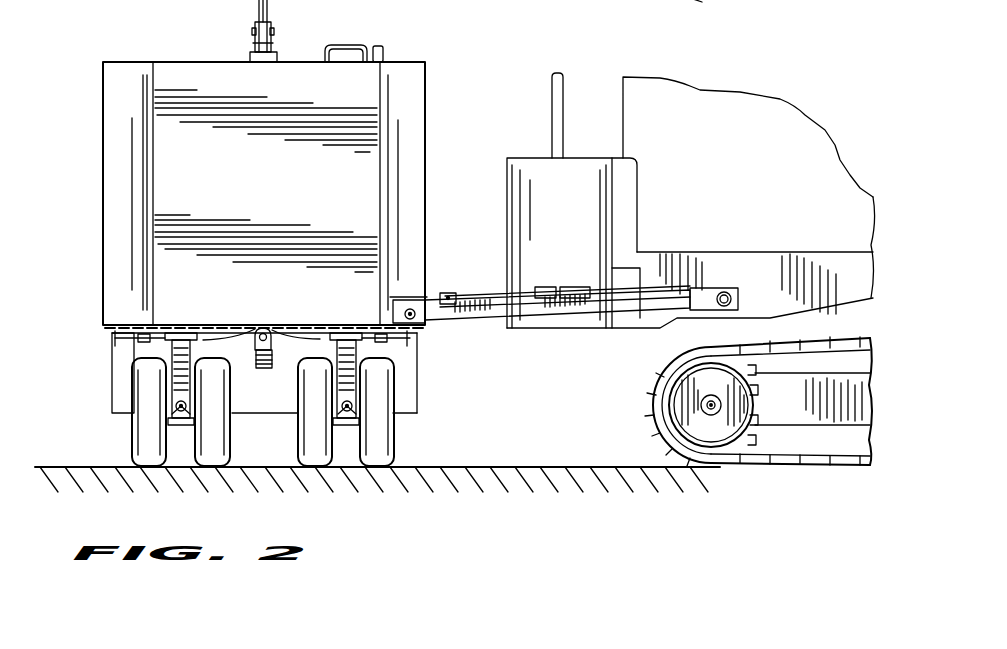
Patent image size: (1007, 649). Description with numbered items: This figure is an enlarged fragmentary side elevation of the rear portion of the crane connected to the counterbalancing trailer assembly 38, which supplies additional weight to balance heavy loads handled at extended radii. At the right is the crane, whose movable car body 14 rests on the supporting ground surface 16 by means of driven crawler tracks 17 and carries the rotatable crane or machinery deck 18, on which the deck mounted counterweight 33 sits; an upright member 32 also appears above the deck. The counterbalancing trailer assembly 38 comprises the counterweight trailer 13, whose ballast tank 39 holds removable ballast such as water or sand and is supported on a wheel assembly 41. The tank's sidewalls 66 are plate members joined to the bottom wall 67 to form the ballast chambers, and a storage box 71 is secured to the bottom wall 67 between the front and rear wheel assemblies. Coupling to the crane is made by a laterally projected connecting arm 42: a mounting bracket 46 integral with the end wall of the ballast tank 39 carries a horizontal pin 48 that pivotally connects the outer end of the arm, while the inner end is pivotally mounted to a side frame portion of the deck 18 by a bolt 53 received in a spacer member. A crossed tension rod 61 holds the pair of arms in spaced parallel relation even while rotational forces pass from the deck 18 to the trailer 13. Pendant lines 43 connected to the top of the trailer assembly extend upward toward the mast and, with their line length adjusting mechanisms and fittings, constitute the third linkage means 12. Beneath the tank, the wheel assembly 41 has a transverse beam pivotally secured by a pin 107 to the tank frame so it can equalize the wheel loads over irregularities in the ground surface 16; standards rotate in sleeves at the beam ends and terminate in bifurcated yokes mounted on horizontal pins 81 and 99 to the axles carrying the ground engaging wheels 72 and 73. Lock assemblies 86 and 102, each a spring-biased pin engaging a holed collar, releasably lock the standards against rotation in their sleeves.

The third linkage means 12 is at (282, 21).
The counterweight trailer 13 is at (104, 306).
The car body 14 is at (790, 412).
The supporting ground surface 16 is at (553, 470).
The crawler tracks 17 is at (656, 400).
The crane or machinery deck 18 is at (871, 290).
The exhaust stack 32 is at (551, 100).
The deck mounted counterweight 33 is at (506, 176).
The counterbalancing trailer assembly 38 is at (102, 88).
The ballast tank 39 is at (103, 170).
The wheel assembly 41 is at (115, 427).
The connecting arm 42 is at (498, 322).
The pendant lines 43 is at (256, 5).
The mounting bracket 46 is at (418, 297).
The horizontal pin 48 is at (428, 323).
The bolt 53 is at (724, 292).
The crossed tension rod 61 is at (490, 297).
The sidewalls 66 is at (284, 191).
The bottom wall 67 is at (293, 325).
The storage box 71 is at (122, 362).
The ground engaging wheels 72 is at (155, 440).
The ground engaging wheels 73 is at (377, 440).
The horizontal pin 81 is at (186, 404).
The lock assembly 86 is at (108, 338).
The horizontal pin 99 is at (342, 408).
The lock assembly 102 is at (398, 363).
The pin 107 is at (256, 326).